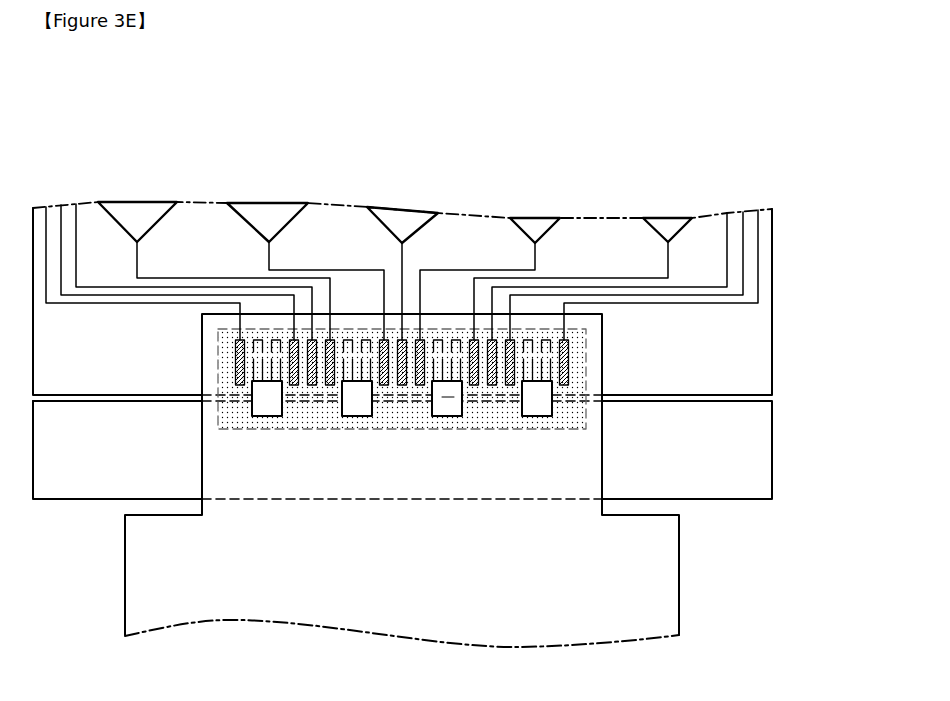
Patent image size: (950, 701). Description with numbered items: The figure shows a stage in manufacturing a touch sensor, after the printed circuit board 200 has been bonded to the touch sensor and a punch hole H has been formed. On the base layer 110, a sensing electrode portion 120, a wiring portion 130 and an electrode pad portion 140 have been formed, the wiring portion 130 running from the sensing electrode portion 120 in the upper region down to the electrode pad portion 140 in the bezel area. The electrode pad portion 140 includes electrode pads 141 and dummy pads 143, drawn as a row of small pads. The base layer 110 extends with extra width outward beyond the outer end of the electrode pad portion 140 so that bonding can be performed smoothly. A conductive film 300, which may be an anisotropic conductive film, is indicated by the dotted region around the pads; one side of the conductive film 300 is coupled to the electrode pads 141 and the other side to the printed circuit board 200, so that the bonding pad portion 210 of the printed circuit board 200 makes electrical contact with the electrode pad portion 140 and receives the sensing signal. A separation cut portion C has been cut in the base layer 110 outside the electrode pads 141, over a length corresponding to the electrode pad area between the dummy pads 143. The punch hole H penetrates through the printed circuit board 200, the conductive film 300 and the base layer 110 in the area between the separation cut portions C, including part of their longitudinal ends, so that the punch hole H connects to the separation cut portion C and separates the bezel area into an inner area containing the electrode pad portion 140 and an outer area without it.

The base layer 110 is at (763, 437).
The sensing electrode portion 120 is at (269, 207).
The wiring portion 130 is at (758, 251).
The electrode pad portion 140 is at (402, 225).
The electrode pad 141 is at (331, 338).
The dummy pad 143 is at (455, 338).
The printed circuit board 200 is at (672, 573).
The bonding pad portion 210 is at (570, 375).
The conductive film 300 is at (575, 364).
The separation cut portion C is at (67, 401).
The punch hole H is at (448, 397).